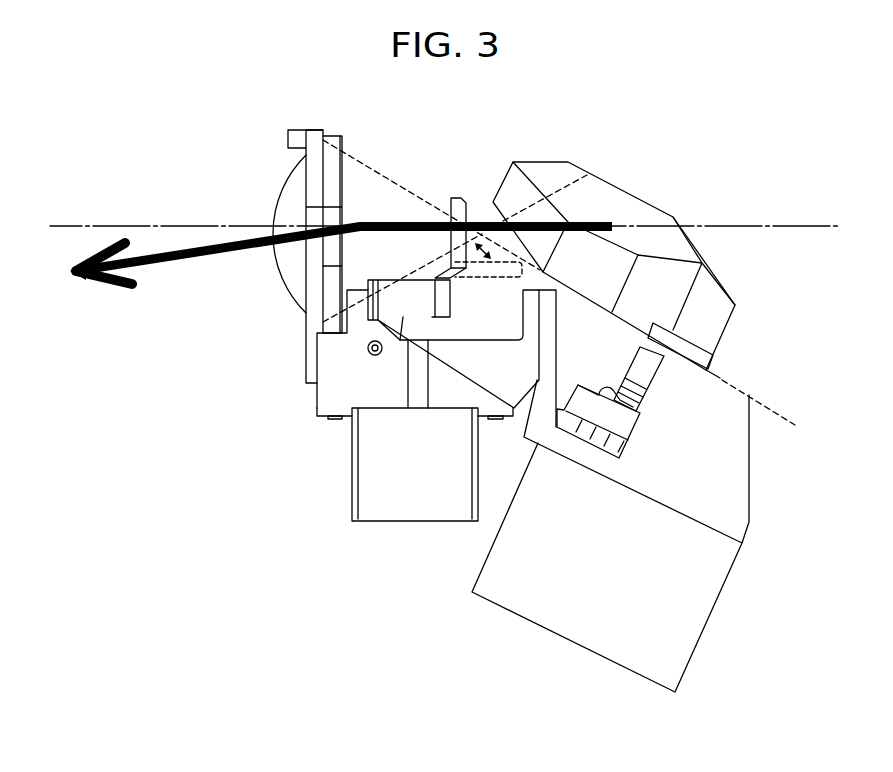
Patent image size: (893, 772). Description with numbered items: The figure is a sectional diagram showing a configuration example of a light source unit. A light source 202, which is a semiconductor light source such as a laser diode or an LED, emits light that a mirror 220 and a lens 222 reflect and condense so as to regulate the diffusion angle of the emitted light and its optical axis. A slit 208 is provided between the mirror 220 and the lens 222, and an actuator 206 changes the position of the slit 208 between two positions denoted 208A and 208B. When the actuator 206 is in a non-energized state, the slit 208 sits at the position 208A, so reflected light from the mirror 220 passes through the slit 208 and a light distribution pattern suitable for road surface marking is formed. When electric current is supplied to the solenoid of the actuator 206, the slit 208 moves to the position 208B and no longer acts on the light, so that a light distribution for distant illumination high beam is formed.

The light source 202 is at (612, 382).
The actuator 206 is at (347, 352).
The slit 208 is at (455, 204).
The position of the slit 208A is at (461, 197).
The position of the slit 208B is at (476, 280).
The mirror 220 is at (629, 194).
The lens 222 is at (282, 189).